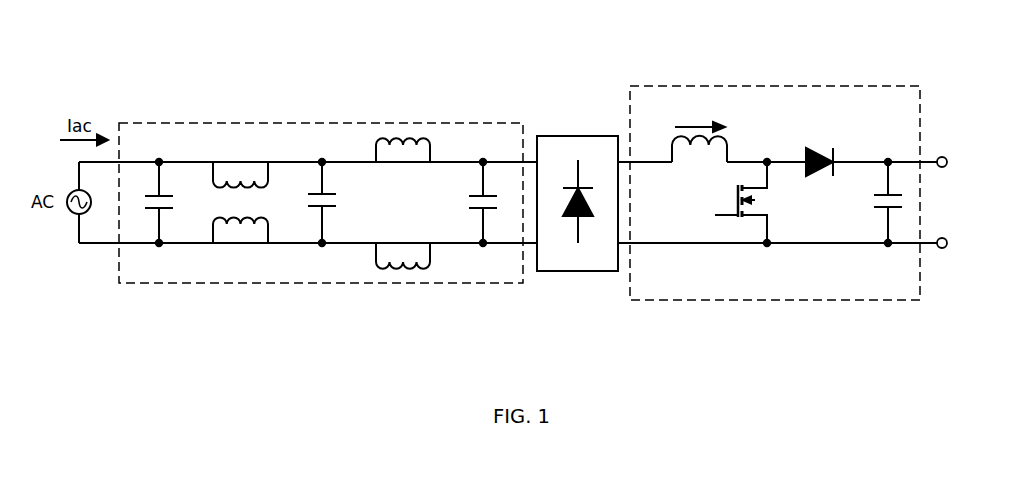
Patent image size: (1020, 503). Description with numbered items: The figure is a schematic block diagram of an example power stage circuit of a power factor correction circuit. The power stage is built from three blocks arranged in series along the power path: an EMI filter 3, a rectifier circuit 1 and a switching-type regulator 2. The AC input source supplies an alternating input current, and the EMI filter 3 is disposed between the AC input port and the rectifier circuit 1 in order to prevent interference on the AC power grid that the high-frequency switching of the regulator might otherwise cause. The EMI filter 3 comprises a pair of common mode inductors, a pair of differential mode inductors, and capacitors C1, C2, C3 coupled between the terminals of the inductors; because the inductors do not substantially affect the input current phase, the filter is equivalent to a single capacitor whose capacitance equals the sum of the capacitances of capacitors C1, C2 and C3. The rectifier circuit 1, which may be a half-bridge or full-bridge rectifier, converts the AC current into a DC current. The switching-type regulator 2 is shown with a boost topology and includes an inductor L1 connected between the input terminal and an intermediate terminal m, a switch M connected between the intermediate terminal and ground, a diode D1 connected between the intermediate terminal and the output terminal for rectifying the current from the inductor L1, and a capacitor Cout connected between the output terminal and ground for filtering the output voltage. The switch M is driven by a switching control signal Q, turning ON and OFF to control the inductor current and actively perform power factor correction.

The rectifier circuit 1 is at (551, 136).
The switching-type regulator 2 is at (775, 161).
The EMI filter 3 is at (321, 170).
The capacitor C1 is at (174, 203).
The capacitor C2 is at (333, 203).
The capacitor C3 is at (467, 203).
The inductor L1 is at (699, 143).
The switching control signal Q is at (741, 191).
The diode D1 is at (820, 146).
The capacitor Cout is at (864, 203).